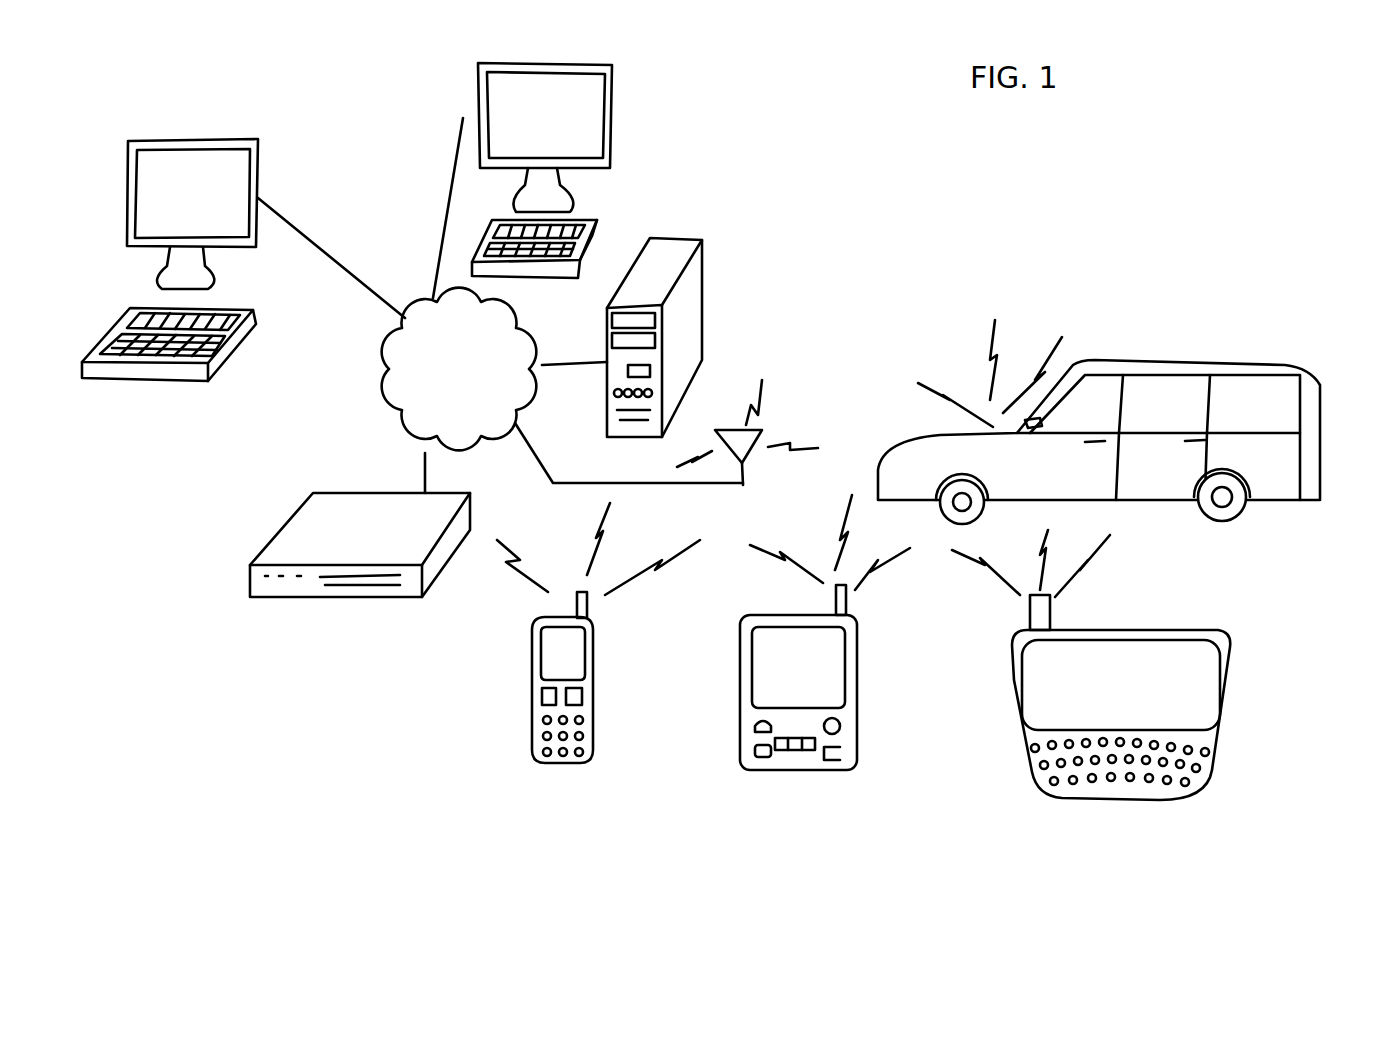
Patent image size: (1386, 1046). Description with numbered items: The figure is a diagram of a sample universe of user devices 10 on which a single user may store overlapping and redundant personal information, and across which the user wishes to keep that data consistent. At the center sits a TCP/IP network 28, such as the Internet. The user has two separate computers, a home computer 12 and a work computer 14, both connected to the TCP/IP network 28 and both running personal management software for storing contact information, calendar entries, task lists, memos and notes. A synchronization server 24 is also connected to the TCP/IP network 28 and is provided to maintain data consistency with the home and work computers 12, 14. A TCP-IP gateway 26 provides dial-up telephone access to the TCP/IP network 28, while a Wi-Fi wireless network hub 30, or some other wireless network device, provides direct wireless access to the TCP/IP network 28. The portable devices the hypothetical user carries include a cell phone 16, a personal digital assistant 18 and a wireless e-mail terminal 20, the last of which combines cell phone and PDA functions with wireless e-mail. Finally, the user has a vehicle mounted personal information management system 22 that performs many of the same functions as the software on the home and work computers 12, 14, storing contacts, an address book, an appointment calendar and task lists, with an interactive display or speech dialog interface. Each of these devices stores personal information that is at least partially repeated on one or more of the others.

The user devices 10 is at (1080, 176).
The home computer 12 is at (238, 140).
The work computer 14 is at (590, 62).
The cell phone 16 is at (595, 697).
The personal digital assistant 18 is at (852, 682).
The wireless e-mail terminal 20 is at (1168, 630).
The vehicle mounted personal information management system 22 is at (920, 435).
The synchronization server 24 is at (675, 238).
The TCP-IP gateway 26 is at (290, 522).
The TCP/IP network 28 is at (380, 393).
The Wi-Fi wireless network hub 30 is at (757, 430).